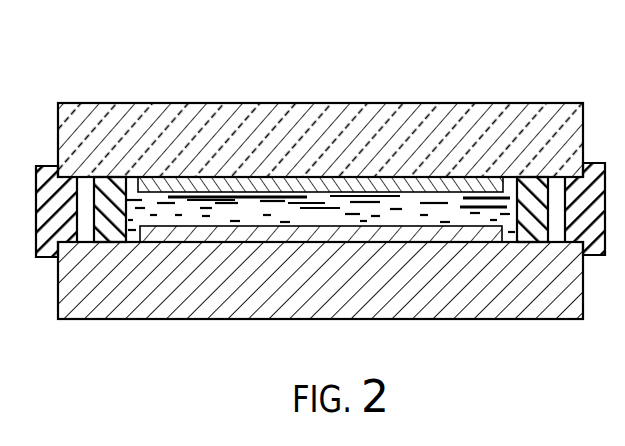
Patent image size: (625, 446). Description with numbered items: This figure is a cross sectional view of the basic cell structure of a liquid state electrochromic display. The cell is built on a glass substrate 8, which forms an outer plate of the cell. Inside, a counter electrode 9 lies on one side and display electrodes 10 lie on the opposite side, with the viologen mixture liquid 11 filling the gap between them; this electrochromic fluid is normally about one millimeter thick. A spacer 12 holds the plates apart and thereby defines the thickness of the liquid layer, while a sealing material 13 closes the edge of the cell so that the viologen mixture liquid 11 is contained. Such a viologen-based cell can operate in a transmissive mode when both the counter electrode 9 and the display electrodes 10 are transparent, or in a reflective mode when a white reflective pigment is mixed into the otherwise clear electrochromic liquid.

The glass substrate 8 is at (410, 102).
The counter electrode 9 is at (443, 180).
The display electrodes 10 is at (478, 235).
The viologen mixture liquid 11 is at (288, 213).
The spacer 12 is at (113, 243).
The sealing material 13 is at (48, 166).